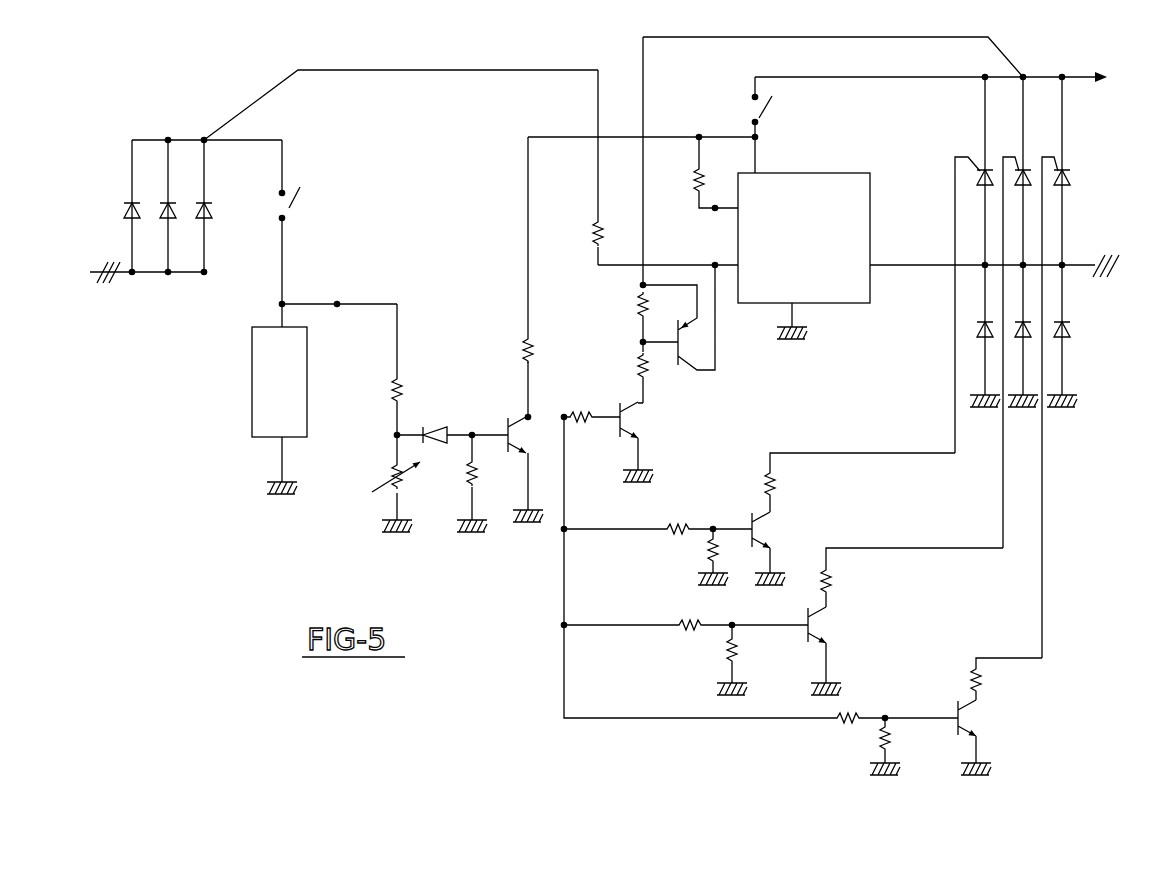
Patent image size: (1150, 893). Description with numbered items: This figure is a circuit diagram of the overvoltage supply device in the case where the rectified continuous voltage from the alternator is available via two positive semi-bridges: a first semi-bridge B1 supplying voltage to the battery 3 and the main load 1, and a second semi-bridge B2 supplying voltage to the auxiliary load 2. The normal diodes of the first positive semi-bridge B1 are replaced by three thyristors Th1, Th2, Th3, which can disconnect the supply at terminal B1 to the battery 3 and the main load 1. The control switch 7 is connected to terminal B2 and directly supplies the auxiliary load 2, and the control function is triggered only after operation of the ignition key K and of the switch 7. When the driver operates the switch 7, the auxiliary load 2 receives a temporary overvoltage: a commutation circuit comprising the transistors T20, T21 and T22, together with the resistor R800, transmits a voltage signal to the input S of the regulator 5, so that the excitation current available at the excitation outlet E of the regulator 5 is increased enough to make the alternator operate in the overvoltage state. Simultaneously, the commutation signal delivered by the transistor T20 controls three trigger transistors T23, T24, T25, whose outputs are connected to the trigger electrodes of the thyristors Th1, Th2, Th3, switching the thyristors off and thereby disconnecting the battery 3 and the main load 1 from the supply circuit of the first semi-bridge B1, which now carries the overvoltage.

The second semi-bridge B2 is at (152, 140).
The control switch 7 is at (293, 209).
The auxiliary load 2 is at (252, 394).
The transistor T20 is at (518, 432).
The resistor R800 is at (637, 167).
The regulator sense terminal S is at (715, 263).
The excitation outlet E is at (715, 206).
The ignition key K is at (770, 125).
The regulator 5 is at (811, 173).
The transistor T22 is at (684, 322).
The transistor T21 is at (636, 415).
The first semi-bridge B1 is at (1043, 77).
The battery 3 is at (1132, 54).
The main load 1 is at (1132, 74).
The thyristor Th1 is at (980, 164).
The thyristor Th2 is at (1019, 164).
The thyristor Th3 is at (1065, 166).
The trigger transistor T23 is at (770, 526).
The trigger transistor T24 is at (824, 622).
The trigger transistor T25 is at (974, 715).